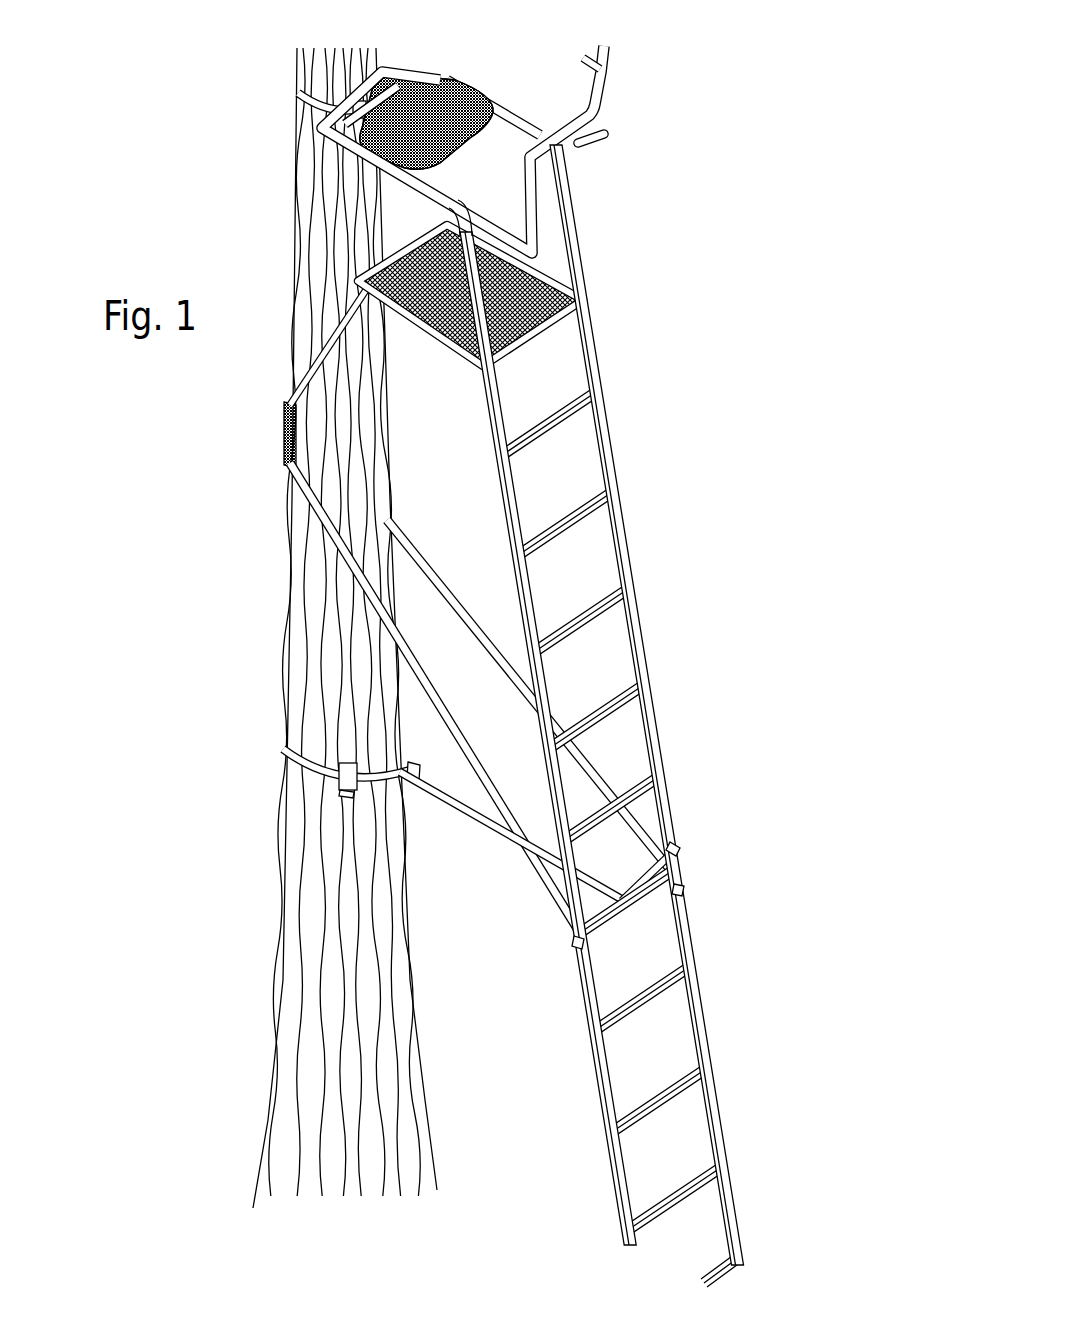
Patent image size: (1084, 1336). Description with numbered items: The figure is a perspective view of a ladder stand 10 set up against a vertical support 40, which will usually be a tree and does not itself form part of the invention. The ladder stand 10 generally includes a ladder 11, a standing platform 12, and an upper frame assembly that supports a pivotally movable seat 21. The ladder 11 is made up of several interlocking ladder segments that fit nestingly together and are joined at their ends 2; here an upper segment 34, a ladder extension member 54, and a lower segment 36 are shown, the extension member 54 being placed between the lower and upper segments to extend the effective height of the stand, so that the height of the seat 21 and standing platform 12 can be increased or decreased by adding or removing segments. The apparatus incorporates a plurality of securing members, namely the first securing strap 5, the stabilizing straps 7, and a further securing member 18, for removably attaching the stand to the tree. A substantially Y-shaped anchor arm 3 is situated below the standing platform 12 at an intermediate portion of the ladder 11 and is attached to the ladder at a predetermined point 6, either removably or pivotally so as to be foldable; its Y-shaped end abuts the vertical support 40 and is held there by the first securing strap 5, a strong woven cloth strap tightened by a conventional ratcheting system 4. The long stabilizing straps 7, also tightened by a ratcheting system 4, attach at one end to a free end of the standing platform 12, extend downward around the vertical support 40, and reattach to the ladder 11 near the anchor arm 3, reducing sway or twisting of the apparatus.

The ends 2 is at (577, 234).
The anchor arm 3 is at (487, 833).
The ratcheting system 4 is at (677, 843).
The first securing strap 5 is at (287, 750).
The predetermined point 6 is at (677, 891).
The stabilizing straps 7 is at (517, 680).
The ladder stand 10 is at (584, 716).
The ladder 11 is at (719, 916).
The standing platform 12 is at (547, 322).
The securing member 18 is at (292, 93).
The seat 21 is at (477, 88).
The upper segment 34 is at (645, 458).
The lower segment 36 is at (745, 1092).
The vertical support 40 is at (257, 1046).
The ladder extension member 54 is at (686, 702).